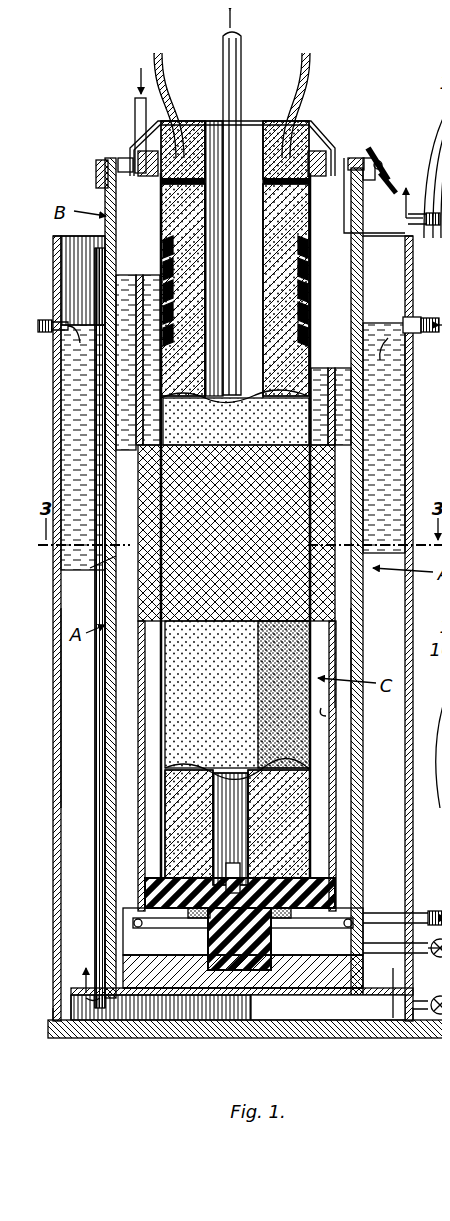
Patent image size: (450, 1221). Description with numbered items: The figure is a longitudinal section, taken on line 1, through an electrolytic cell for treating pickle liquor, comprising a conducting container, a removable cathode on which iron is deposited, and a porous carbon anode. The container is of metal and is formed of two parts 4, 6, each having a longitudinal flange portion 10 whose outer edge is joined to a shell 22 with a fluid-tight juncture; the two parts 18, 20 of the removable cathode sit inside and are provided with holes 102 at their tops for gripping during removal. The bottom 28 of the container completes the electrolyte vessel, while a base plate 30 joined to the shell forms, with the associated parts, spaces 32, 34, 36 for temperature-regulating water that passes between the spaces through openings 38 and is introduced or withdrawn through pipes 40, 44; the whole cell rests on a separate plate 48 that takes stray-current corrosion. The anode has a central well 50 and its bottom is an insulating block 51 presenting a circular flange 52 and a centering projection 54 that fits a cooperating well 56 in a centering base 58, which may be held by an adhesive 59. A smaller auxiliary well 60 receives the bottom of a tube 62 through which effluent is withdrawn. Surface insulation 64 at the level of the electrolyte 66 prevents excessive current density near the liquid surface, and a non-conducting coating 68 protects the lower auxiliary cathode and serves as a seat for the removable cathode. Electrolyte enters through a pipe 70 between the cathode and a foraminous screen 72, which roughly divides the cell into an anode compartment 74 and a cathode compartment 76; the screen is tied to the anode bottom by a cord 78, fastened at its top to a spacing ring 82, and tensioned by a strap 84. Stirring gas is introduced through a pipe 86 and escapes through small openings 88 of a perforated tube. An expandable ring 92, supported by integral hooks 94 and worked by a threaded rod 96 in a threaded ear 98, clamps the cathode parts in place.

The section line 1— 1 is at (411, 192).
The container part 4 is at (333, 625).
The container part 6 is at (82, 560).
The longitudinal flange portion 10 is at (96, 792).
The removable cathode part 18 is at (352, 648).
The removable cathode part 20 is at (112, 575).
The shell 22 is at (406, 418).
The bottom of the container 28 is at (308, 980).
The base plate 30 is at (315, 1012).
The space for temperature regulating media 32 is at (385, 488).
The space for temperature regulating media 34 is at (180, 1000).
The space for temperature regulating media 36 is at (448, 812).
The openings 38 is at (78, 1000).
The pipe 40 is at (402, 310).
The pipe 44 is at (48, 312).
The separate plate 48 is at (418, 1032).
The central well 50 is at (245, 125).
The insulating block 51 is at (275, 922).
The circular flange 52 is at (300, 882).
The centering projection 54 is at (235, 950).
The cooperating well 56 is at (262, 950).
The centering base 58 is at (148, 978).
The adhesive 59 is at (375, 998).
The auxiliary well 60 is at (245, 870).
The tube 62 is at (216, 45).
The surface insulation 64 is at (302, 247).
The electrolyte 66 is at (340, 295).
The non-conducting coating 68 is at (118, 938).
The pipe 70 is at (128, 92).
The foraminous screen 72 is at (280, 495).
The anode compartment 74 is at (320, 708).
The cathode compartment 76 is at (345, 734).
The cord 78 is at (189, 932).
The spacing ring 82 is at (126, 150).
The strap 84 is at (310, 120).
The pipe 86 is at (433, 903).
The small openings 88 is at (298, 922).
The expandable ring 92 is at (112, 158).
The integral hooks 94 is at (92, 178).
The threaded rod 96 is at (370, 152).
The threaded ear 98 is at (374, 176).
The holes 102 is at (103, 205).